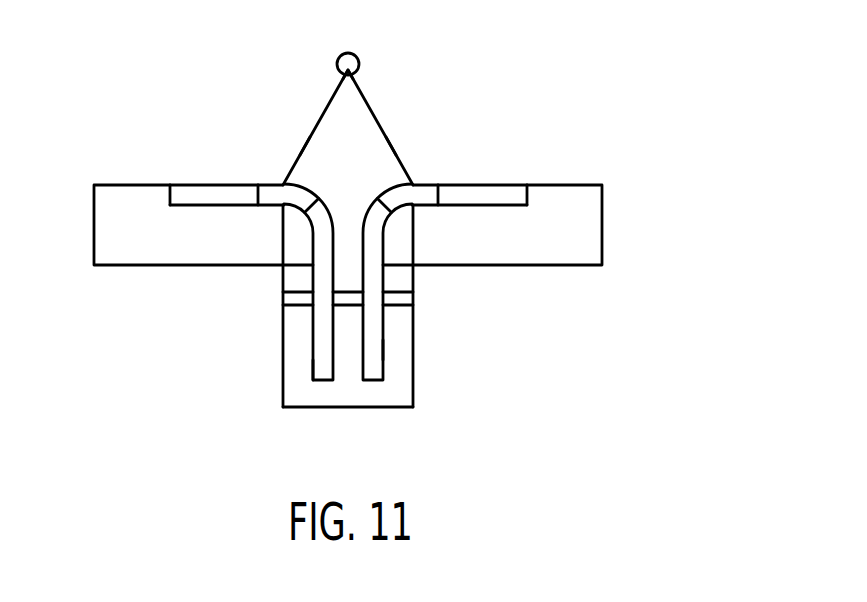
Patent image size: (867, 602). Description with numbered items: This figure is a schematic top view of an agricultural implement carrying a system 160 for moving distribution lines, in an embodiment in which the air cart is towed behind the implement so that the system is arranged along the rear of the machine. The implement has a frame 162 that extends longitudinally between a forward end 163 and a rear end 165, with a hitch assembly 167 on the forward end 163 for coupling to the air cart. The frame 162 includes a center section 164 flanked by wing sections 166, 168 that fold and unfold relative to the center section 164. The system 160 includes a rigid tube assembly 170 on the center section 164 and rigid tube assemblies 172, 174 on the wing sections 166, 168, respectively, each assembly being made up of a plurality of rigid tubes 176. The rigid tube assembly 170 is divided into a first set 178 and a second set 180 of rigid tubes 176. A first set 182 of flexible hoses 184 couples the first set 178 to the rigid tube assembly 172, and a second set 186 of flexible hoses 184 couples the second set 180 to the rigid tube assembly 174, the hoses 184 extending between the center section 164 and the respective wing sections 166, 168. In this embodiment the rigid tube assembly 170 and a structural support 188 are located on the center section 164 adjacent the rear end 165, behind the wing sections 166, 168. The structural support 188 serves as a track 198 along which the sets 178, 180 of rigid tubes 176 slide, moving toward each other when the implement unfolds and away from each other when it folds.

The system for moving distribution lines 160 is at (397, 382).
The frame 162 is at (387, 112).
The forward end 163 is at (330, 86).
The center section 164 is at (411, 156).
The rear end 165 is at (355, 417).
The wing section 166 is at (520, 169).
The hitch assembly 167 is at (352, 53).
The wing section 168 is at (169, 166).
The rigid tube assembly 170 is at (311, 331).
The rigid tube assembly 172 is at (491, 177).
The rigid tube assembly 174 is at (188, 179).
The rigid tubes 176 is at (192, 198).
The first set of rigid tubes 178 is at (388, 347).
The second set of rigid tubes 180 is at (311, 369).
The first set of flexible hoses 182 is at (376, 183).
The flexible hoses 184 is at (274, 192).
The second set of flexible hoses 186 is at (322, 182).
The structural support 188 is at (297, 311).
The track 198 is at (414, 318).